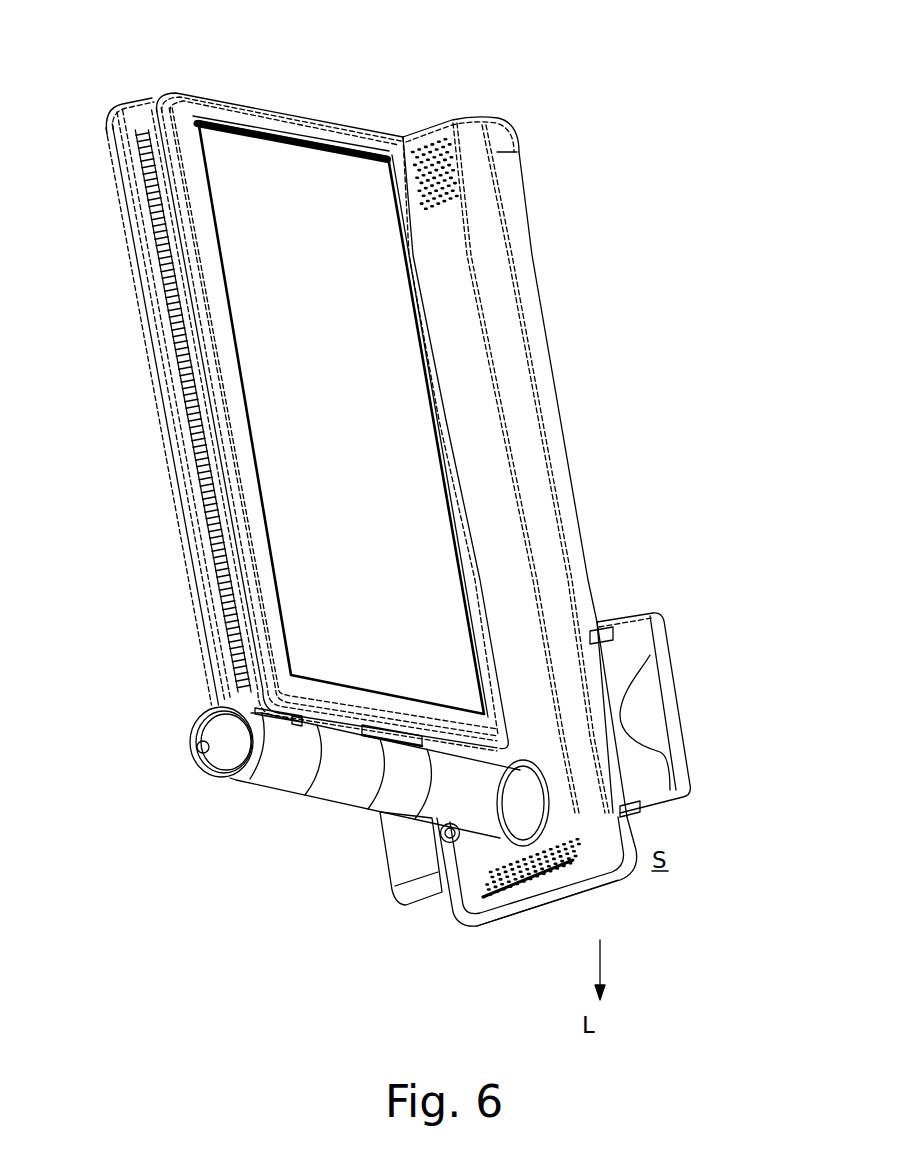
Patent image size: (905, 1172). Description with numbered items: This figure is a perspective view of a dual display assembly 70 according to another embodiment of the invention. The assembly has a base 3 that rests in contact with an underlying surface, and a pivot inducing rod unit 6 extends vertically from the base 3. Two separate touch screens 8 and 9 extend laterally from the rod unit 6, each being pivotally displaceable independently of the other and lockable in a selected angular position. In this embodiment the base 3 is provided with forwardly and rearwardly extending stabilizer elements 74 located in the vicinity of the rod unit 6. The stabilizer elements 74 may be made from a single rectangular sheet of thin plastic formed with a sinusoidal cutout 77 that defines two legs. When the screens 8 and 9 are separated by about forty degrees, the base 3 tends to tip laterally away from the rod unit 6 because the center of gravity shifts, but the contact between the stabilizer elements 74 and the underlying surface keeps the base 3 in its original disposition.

The base 3 is at (483, 428).
The pivot inducing rod unit 6 is at (310, 782).
The touch screen 8 is at (158, 270).
The touch screen 9 is at (347, 125).
The dual display assembly 70 is at (172, 681).
The stabilizer elements 74 is at (633, 778).
The sinusoidal cutout 77 is at (650, 721).